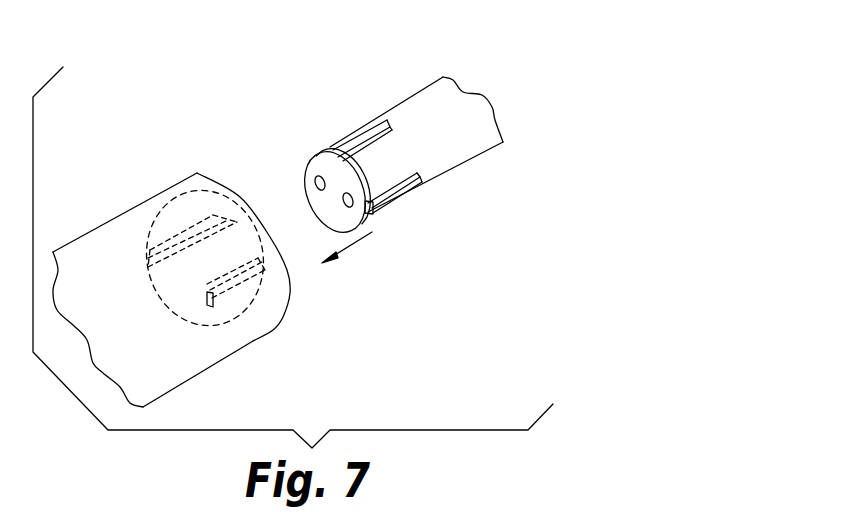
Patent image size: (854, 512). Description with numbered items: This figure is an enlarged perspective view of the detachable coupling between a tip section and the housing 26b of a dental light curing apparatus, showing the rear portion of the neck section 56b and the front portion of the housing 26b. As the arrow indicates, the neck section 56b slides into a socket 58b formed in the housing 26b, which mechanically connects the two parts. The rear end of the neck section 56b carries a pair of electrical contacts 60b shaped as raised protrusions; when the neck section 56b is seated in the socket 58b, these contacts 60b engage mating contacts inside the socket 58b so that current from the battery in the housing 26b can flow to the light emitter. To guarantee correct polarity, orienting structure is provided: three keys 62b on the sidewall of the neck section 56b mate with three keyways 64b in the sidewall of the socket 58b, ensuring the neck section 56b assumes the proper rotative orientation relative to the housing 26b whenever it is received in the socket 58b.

The housing 26b is at (105, 230).
The neck section 56b is at (435, 87).
The socket 58b is at (288, 268).
The electrical contacts 60b is at (346, 196).
The keys 62b is at (362, 137).
The keyways 64b is at (213, 213).